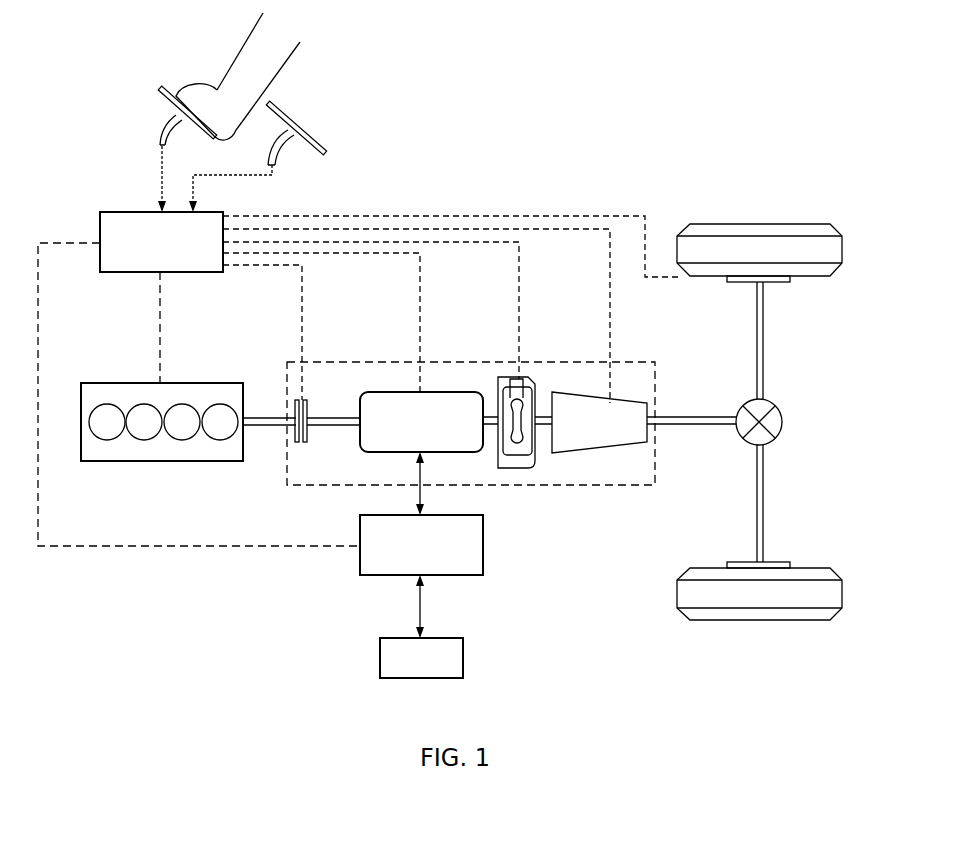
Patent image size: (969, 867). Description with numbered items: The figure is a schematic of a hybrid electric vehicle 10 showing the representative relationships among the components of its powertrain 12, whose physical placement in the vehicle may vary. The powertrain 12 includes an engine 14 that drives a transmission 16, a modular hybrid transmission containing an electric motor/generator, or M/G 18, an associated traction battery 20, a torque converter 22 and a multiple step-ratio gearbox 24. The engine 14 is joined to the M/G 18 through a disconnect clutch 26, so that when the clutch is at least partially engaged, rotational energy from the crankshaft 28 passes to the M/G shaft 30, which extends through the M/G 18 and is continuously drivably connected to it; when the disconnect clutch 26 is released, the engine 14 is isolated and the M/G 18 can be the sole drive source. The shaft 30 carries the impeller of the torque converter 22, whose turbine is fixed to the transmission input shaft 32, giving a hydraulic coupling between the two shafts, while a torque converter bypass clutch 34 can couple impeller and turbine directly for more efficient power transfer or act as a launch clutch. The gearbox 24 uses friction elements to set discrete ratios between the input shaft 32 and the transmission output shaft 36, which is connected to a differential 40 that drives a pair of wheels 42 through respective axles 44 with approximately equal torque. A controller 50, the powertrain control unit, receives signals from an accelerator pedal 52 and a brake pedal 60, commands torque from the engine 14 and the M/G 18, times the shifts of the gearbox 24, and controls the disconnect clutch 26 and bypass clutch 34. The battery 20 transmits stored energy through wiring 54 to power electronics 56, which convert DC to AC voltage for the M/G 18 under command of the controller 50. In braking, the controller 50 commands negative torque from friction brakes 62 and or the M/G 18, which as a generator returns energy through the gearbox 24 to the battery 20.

The hybrid electric vehicle 10 is at (664, 156).
The powertrain 12 is at (236, 590).
The engine 14 is at (100, 383).
The transmission 16 is at (456, 362).
The electric motor/generator (M/G) 18 is at (395, 392).
The traction battery 20 is at (380, 659).
The torque converter 22 is at (512, 470).
The gearbox 24 is at (592, 453).
The disconnect clutch 26 is at (302, 443).
The crankshaft 28 is at (268, 418).
The M/G shaft 30 is at (335, 418).
The transmission input shaft 32 is at (545, 400).
The torque converter bypass clutch 34 is at (518, 378).
The transmission output shaft 36 is at (705, 417).
The differential 40 is at (783, 422).
The wheels 42 is at (757, 224).
The axles 44 is at (764, 337).
The powertrain control unit (controller) 50 is at (118, 212).
The accelerator pedal 52 is at (160, 104).
The wiring 54 is at (418, 607).
The power electronics 56 is at (485, 546).
The brake pedal 60 is at (290, 119).
The friction brakes 62 is at (790, 283).